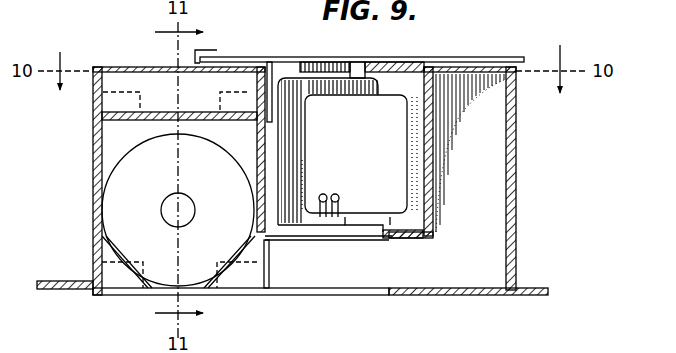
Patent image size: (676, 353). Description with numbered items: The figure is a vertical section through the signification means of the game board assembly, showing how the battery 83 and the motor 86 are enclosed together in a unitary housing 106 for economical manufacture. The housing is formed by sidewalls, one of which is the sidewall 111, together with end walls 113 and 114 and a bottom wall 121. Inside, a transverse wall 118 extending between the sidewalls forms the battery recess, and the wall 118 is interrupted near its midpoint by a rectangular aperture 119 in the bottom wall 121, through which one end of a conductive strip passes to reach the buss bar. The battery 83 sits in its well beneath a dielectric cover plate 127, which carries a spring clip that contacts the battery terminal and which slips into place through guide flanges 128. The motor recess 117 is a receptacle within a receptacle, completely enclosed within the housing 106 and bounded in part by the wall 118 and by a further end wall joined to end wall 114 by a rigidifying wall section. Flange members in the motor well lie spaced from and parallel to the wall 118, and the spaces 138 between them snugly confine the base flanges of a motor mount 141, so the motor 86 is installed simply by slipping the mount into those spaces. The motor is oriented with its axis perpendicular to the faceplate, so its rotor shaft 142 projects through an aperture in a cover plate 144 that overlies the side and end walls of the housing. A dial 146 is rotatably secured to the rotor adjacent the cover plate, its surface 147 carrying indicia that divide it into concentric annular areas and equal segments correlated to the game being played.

The battery 83 is at (207, 179).
The motor 86 is at (356, 155).
The housing 106 is at (318, 200).
The sidewall 111 is at (459, 243).
The end wall 113 is at (93, 176).
The end wall 114 is at (516, 158).
The motor recess 117 is at (406, 240).
The transverse wall 118 is at (269, 254).
The rectangular aperture 119 is at (322, 296).
The bottom wall 121 is at (413, 296).
The dielectric cover plate 127 is at (221, 145).
The guide flanges 128 is at (122, 92).
The spaces 138 is at (273, 115).
The motor mount 141 is at (322, 78).
The rotor shaft 142 is at (365, 62).
The cover plate 144 is at (490, 60).
The dial 146 is at (277, 62).
The dial surface 147 is at (352, 62).